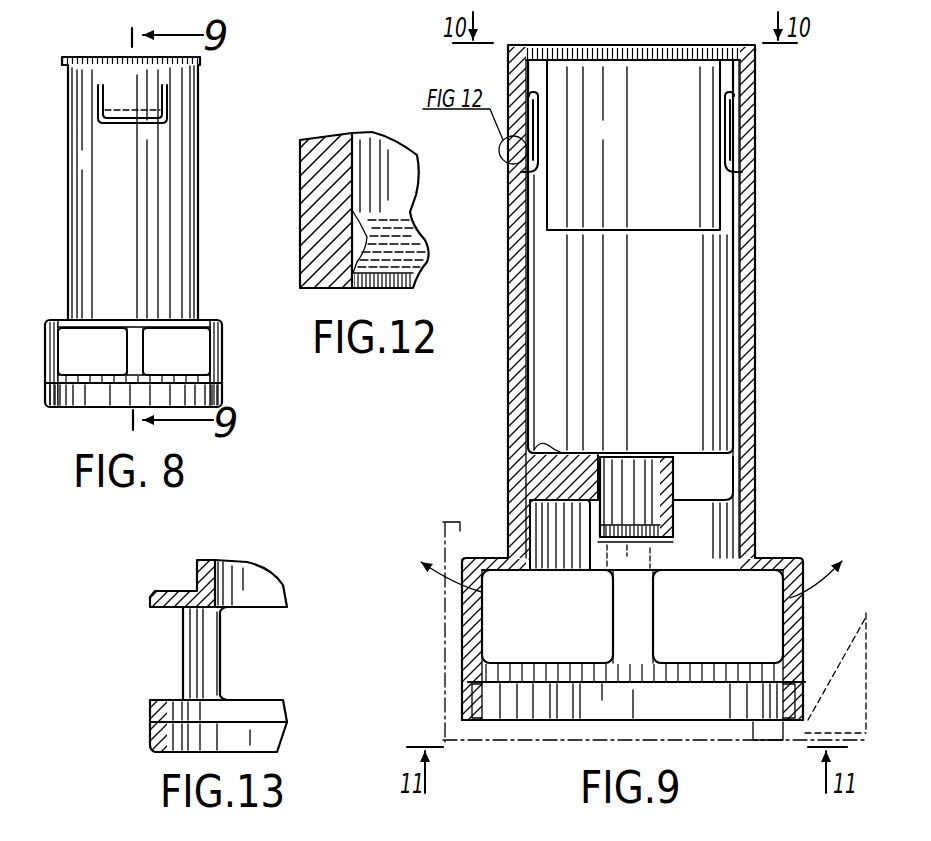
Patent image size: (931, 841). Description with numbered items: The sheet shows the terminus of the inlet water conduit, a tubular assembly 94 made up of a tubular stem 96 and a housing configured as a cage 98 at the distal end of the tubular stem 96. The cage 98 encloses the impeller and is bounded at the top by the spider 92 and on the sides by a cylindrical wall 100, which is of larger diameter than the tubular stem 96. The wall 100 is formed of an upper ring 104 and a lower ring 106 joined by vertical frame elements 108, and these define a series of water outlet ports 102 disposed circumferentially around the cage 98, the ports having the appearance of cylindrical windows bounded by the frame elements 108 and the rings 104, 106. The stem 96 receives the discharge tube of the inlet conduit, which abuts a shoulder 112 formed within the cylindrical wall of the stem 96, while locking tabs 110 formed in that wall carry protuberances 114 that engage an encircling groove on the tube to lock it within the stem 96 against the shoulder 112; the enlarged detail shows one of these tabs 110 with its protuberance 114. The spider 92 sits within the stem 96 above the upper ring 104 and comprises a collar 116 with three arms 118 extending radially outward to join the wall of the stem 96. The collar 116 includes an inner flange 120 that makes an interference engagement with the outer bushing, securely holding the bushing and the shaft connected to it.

In FIG. 9, the spider 92 is at (700, 451).
In FIG. 8, the tubular assembly 94 is at (202, 192).
In FIG. 9, the tubular assembly 94 is at (758, 313).
In FIG. 8, the tubular stem 96 is at (197, 240).
In FIG. 9, the tubular stem 96 is at (757, 407).
In FIG. 8, the cage 98 is at (228, 350).
In FIG. 9, the cage 98 is at (454, 661).
In FIG. 8, the cylindrical wall 100 is at (122, 411).
In FIG. 9, the cylindrical wall 100 is at (586, 723).
In FIG. 8, the water outlet ports 102 is at (208, 373).
In FIG. 9, the water outlet ports 102 is at (543, 663).
In FIG. 8, the upper ring 104 is at (150, 346).
In FIG. 13, the upper ring 104 is at (180, 587).
In FIG. 9, the upper ring 104 is at (464, 558).
In FIG. 8, the lower ring 106 is at (80, 410).
In FIG. 13, the lower ring 106 is at (282, 740).
In FIG. 9, the lower ring 106 is at (750, 730).
In FIG. 8, the vertical frame elements 108 is at (62, 357).
In FIG. 13, the vertical frame elements 108 is at (223, 668).
In FIG. 9, the vertical frame elements 108 is at (483, 636).
In FIG. 8, the locking tabs 110 is at (163, 100).
In FIG. 12, the locking tabs 110 is at (418, 177).
In FIG. 9, the locking tabs 110 is at (533, 120).
In FIG. 9, the shoulder 112 is at (687, 200).
In FIG. 12, the protuberances 114 is at (433, 252).
In FIG. 9, the collar 116 is at (674, 526).
In FIG. 9, the arms 118 is at (530, 443).
In FIG. 9, the inner flange 120 is at (654, 551).